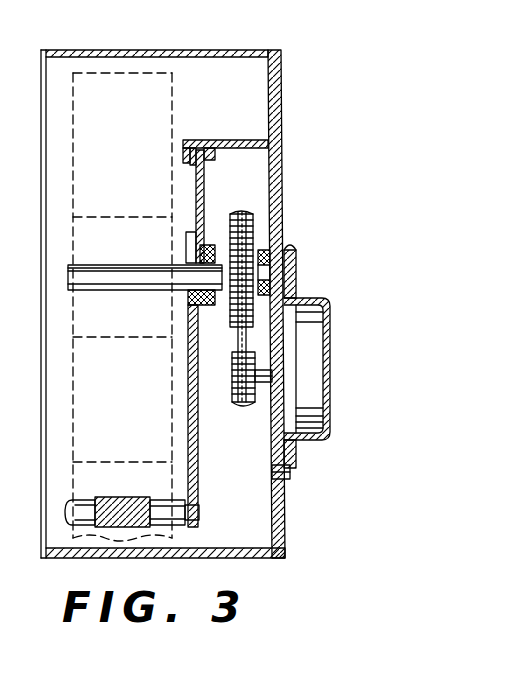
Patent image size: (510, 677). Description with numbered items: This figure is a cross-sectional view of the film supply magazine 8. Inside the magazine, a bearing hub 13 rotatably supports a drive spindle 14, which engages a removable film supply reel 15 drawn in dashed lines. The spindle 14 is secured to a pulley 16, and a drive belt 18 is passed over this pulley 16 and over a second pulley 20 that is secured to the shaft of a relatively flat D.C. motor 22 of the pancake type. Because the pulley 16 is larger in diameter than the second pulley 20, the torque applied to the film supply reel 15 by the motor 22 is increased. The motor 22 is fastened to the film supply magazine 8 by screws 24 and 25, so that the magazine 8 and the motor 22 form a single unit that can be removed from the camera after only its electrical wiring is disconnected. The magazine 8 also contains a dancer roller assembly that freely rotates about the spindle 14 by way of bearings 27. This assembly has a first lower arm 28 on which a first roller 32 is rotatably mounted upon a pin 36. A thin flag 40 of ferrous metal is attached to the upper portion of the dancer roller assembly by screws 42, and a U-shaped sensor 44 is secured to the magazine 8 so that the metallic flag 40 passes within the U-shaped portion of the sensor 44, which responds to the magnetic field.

The film supply magazine 8 is at (210, 50).
The bearing hub 13 is at (262, 250).
The drive spindle 14 is at (92, 275).
The film supply reel 15 is at (100, 330).
The pulley 16 is at (230, 236).
The drive belt 18 is at (232, 346).
The second pulley 20 is at (232, 403).
The D.C. motor 22 is at (333, 330).
The screw 24 is at (292, 270).
The screw 25 is at (296, 470).
The bearings 27 is at (200, 306).
The first lower arm 28 is at (200, 470).
The first roller 32 is at (88, 500).
The pin 36 is at (133, 497).
The flag 40 is at (205, 190).
The screws 42 is at (186, 238).
The U-shaped sensor 44 is at (196, 140).